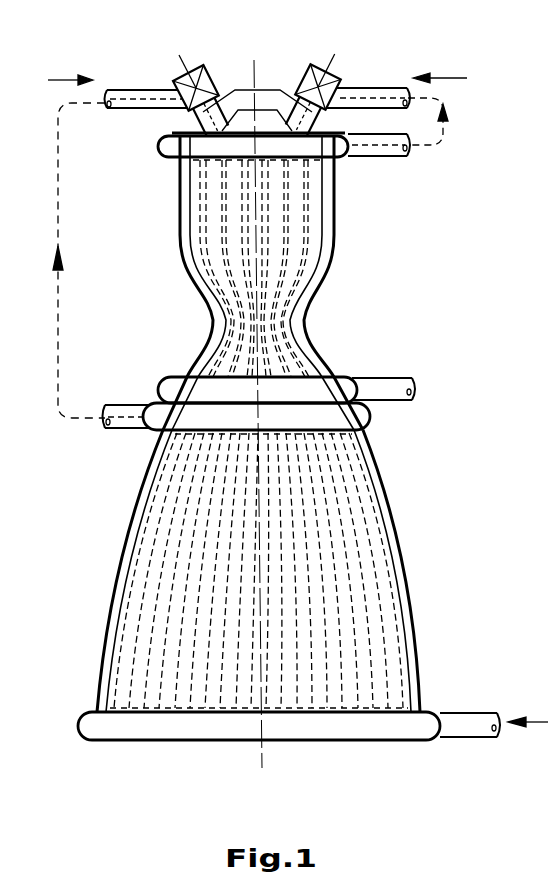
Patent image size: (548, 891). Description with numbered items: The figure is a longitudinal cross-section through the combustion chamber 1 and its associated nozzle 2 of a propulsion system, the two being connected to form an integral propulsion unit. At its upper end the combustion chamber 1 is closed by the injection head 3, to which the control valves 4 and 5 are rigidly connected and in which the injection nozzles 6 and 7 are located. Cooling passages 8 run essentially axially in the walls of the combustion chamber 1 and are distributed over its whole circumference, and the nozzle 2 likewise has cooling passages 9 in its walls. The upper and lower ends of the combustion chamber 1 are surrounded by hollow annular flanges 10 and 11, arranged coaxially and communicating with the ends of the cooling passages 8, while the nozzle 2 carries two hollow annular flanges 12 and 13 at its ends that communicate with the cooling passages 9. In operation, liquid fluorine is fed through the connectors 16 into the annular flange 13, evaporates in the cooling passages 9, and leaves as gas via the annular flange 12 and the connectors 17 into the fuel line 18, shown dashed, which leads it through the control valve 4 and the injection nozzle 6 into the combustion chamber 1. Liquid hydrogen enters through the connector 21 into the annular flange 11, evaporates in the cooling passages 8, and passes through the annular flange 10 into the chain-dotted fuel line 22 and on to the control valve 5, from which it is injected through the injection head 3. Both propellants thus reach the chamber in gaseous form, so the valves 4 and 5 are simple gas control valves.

The combustion chamber 1 is at (322, 263).
The nozzle 2 is at (118, 603).
The injection head 3 is at (289, 86).
The control valve 4 is at (190, 79).
The control valve 5 is at (336, 76).
The injection nozzle 6 is at (181, 160).
The injection nozzle 7 is at (322, 153).
The cooling passages 8 is at (308, 246).
The cooling passages 9 is at (361, 641).
The hollow annular flange 10 is at (172, 153).
The hollow annular flange 11 is at (340, 392).
The hollow annular flange 12 is at (362, 431).
The hollow annular flange 13 is at (97, 725).
The connectors 16 is at (478, 722).
The connectors 17 is at (122, 405).
The fuel line 18 is at (61, 298).
The connector 21 is at (406, 383).
The fuel line 22 is at (446, 128).